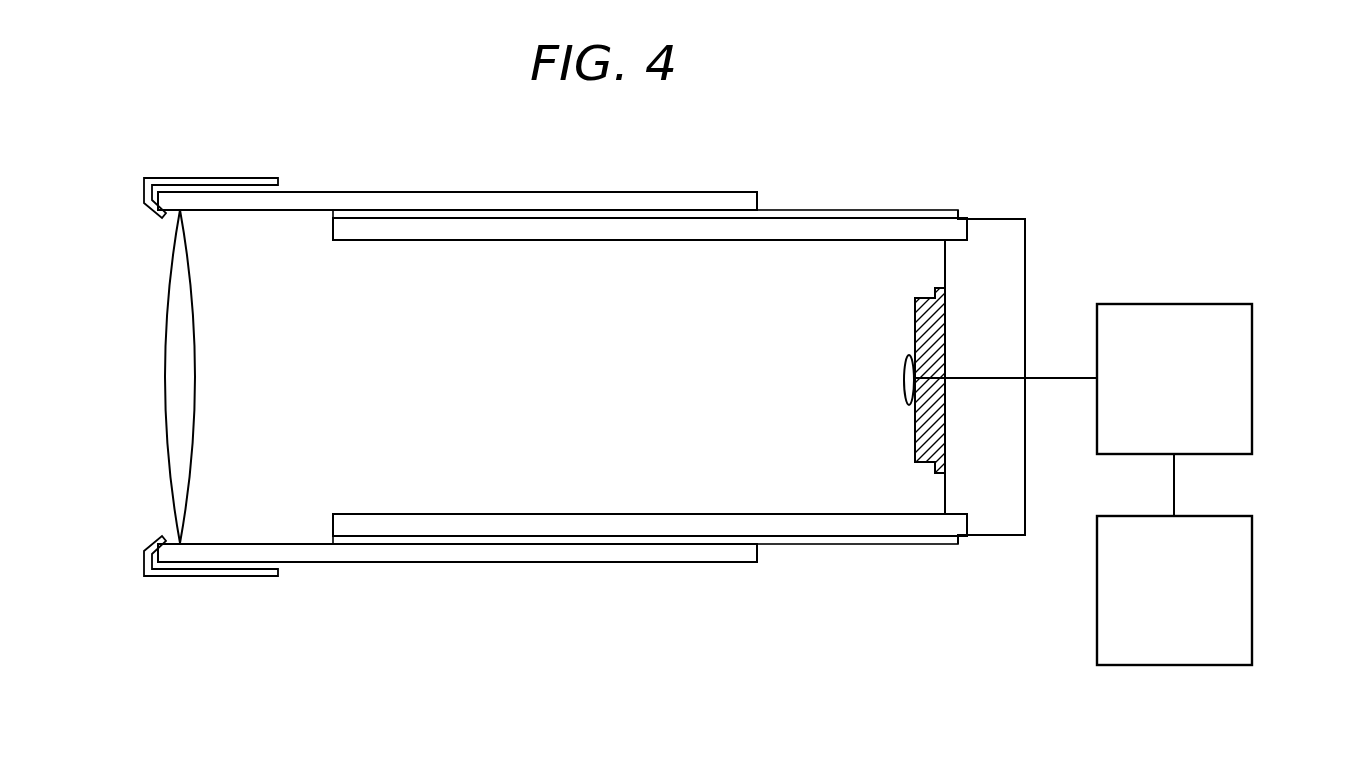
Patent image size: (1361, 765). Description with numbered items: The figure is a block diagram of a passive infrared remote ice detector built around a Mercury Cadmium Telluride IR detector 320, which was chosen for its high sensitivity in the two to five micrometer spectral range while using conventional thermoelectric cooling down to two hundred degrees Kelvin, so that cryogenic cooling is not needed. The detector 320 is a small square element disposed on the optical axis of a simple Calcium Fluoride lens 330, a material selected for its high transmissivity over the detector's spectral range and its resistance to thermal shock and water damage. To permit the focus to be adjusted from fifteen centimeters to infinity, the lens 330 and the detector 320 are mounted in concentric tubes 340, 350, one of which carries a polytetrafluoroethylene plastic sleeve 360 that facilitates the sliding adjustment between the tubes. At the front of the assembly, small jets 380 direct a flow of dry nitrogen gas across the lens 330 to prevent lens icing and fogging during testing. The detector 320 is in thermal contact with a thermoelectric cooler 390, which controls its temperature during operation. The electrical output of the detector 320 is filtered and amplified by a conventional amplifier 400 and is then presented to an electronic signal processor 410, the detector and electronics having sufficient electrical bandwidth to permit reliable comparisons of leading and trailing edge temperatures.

The HgCdTe IR detector 320 is at (907, 358).
The Calcium Fluoride lens 330 is at (170, 275).
The concentric tube 340 is at (463, 198).
The concentric tube 350 is at (828, 528).
The polytetrafluoroethylene plastic sleeve 360 is at (821, 210).
The jets 380 is at (248, 178).
The thermoelectric cooler 390 is at (915, 443).
The amplifier 400 is at (1253, 378).
The electronic signal processor 410 is at (1253, 590).